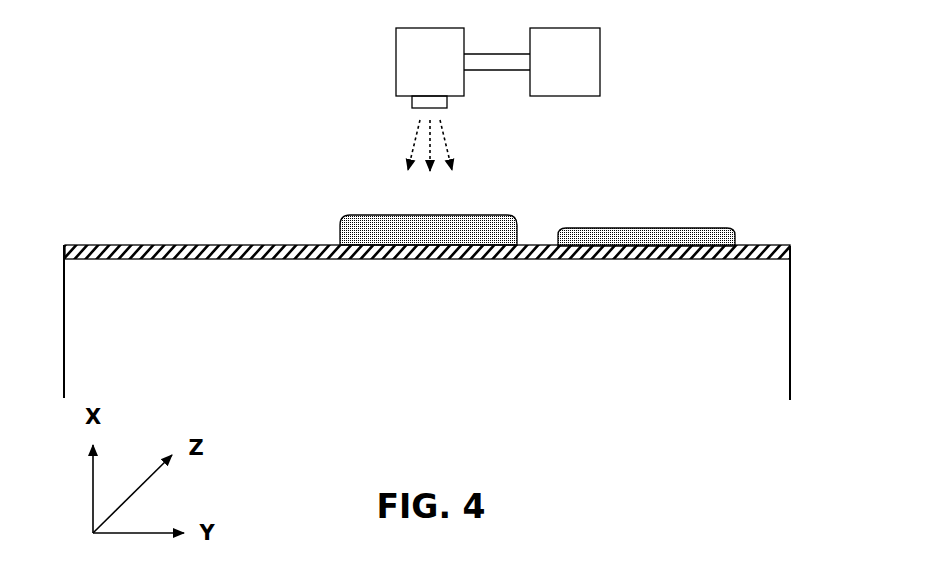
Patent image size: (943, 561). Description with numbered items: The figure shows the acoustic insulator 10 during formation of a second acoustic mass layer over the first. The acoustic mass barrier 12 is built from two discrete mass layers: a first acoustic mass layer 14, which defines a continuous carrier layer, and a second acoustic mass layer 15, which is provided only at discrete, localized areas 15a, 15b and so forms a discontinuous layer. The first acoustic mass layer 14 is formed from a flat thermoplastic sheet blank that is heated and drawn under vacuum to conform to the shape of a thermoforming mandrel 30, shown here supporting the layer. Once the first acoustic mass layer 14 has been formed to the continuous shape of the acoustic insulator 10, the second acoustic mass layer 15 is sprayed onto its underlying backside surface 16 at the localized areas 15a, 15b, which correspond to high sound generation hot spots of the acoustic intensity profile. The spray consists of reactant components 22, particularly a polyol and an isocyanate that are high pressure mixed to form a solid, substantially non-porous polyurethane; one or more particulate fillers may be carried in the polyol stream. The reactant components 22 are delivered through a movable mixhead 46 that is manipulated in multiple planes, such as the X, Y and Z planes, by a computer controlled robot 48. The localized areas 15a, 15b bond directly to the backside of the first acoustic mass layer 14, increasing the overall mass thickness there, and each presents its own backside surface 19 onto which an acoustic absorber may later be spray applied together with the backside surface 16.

The acoustic insulator 10 is at (128, 120).
The acoustic mass barrier 12 is at (624, 275).
The first acoustic mass layer 14 is at (792, 250).
The second acoustic mass layer 15 is at (323, 200).
The localized area 15a is at (482, 230).
The localized area 15b is at (652, 234).
The backside surface 16 is at (789, 245).
The backside surface 19 is at (600, 226).
The reactant components 22 is at (399, 145).
The thermoforming mandrel 30 is at (142, 326).
The movable mixhead 46 is at (416, 74).
The computer controlled robot 48 is at (551, 74).